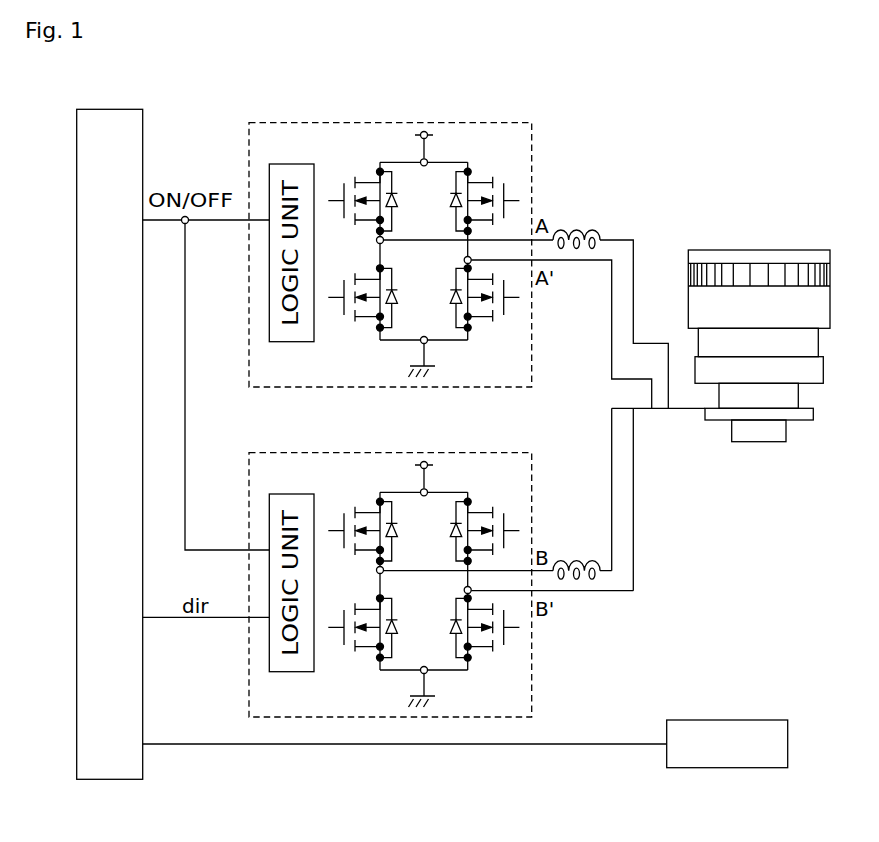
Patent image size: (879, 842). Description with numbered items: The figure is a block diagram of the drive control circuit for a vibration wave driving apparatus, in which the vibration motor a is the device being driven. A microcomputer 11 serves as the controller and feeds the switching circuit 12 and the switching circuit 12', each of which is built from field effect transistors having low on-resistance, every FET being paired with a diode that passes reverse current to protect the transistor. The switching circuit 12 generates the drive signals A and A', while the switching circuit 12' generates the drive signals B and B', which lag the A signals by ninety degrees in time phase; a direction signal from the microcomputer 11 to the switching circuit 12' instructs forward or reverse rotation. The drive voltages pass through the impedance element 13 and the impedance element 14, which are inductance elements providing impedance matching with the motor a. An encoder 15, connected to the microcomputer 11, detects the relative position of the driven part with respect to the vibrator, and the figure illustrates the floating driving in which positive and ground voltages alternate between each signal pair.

The microcomputer 11 is at (115, 107).
The switching circuit 12 is at (390, 236).
The switching circuit 12' is at (390, 566).
The impedance element 13 is at (570, 227).
The impedance element 14 is at (570, 557).
The encoder 15 is at (725, 720).
The vibration motor a is at (773, 250).